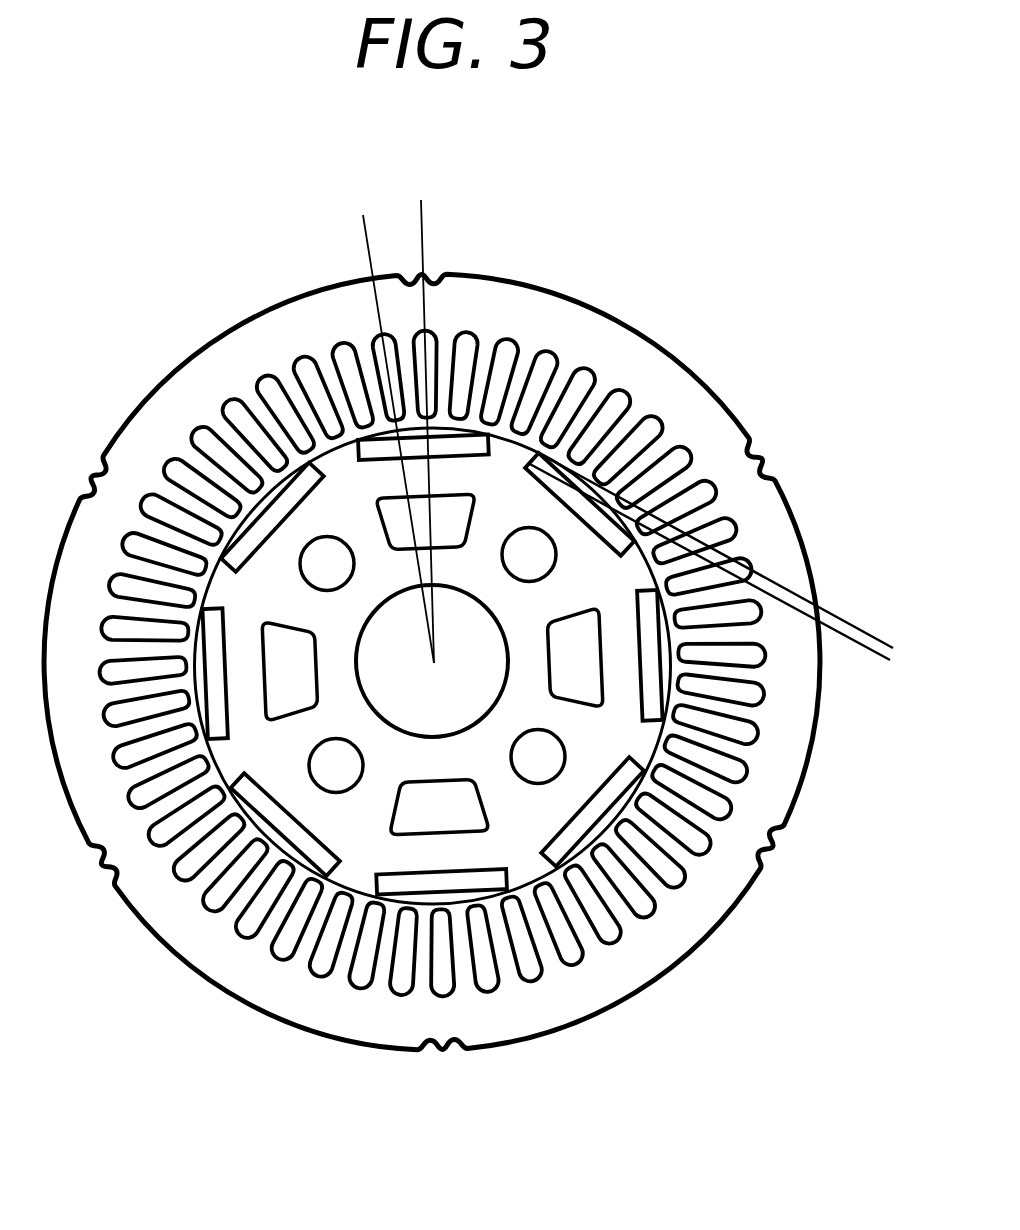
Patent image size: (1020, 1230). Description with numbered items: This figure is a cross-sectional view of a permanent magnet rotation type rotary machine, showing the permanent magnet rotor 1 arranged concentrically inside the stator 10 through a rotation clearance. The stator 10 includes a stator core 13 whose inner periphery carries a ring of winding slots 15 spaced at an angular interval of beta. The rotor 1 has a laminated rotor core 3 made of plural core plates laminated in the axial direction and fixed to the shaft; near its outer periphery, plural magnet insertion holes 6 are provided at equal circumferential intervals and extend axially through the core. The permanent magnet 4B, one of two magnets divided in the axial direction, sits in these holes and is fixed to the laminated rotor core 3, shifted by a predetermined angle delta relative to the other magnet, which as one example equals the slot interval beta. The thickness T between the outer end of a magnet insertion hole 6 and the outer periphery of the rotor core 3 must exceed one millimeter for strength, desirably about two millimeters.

The permanent magnet rotor 1 is at (470, 594).
The laminated rotor core 3 is at (622, 740).
The permanent magnet 4B is at (273, 508).
The magnet insertion hole 6 is at (237, 528).
The stator 10 is at (479, 651).
The stator core 13 is at (597, 313).
The winding slot 15 is at (653, 432).
The thickness T is at (842, 693).